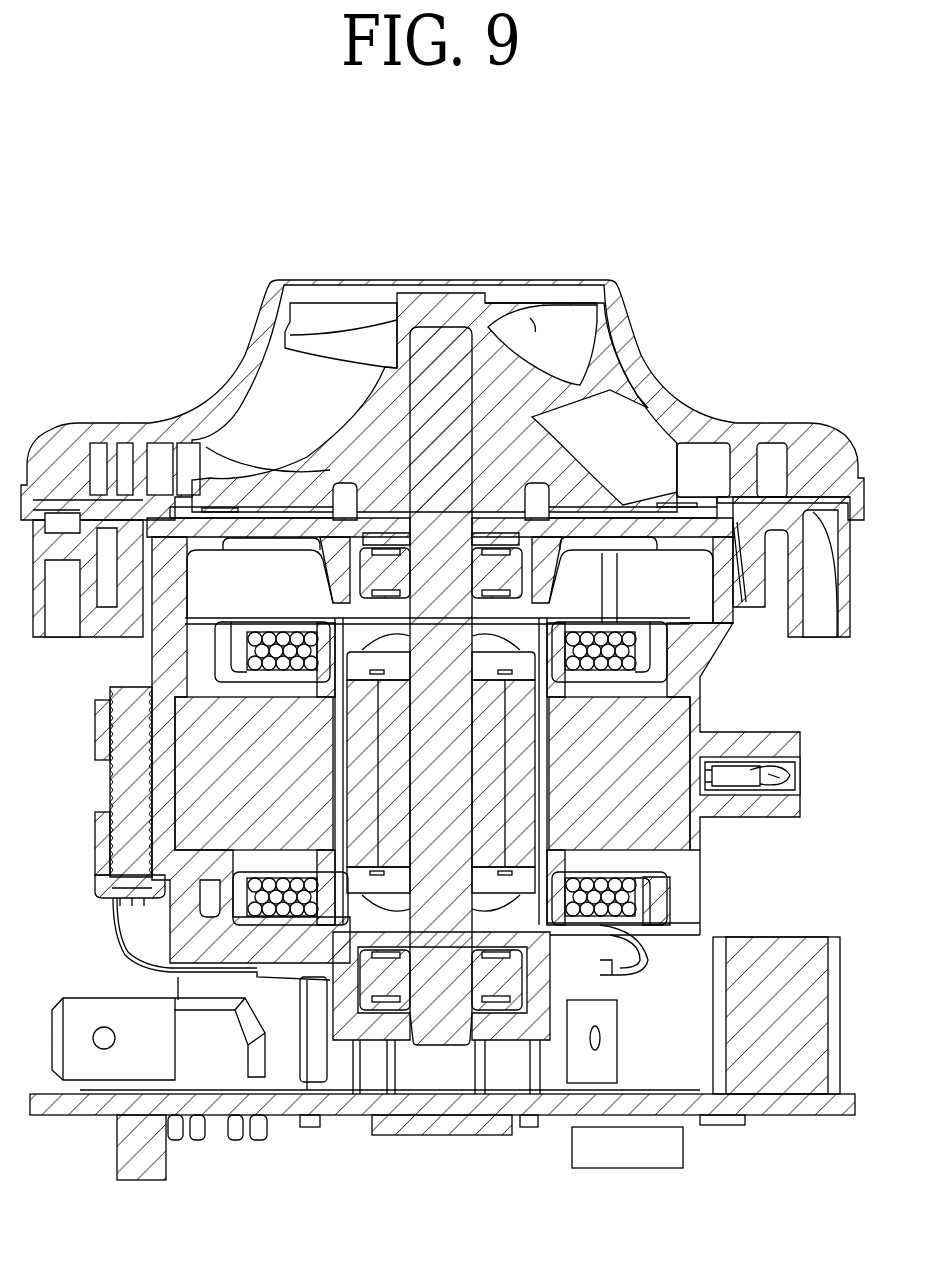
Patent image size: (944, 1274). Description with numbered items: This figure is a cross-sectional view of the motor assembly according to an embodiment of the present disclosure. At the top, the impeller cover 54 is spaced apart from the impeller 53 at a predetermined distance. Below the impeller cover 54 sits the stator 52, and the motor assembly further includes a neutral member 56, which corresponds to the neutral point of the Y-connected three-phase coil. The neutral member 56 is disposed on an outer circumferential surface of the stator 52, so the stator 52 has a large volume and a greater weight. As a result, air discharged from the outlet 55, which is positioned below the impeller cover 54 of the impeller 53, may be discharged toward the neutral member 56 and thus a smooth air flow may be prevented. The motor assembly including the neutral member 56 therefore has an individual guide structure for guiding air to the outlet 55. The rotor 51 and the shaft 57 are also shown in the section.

The rotor 51 is at (522, 793).
The stator 52 is at (203, 783).
The impeller 53 is at (537, 330).
The impeller cover 54 is at (200, 407).
The outlet 55 is at (828, 628).
The neutral member 56 is at (793, 782).
The rotating shaft 57 is at (437, 335).